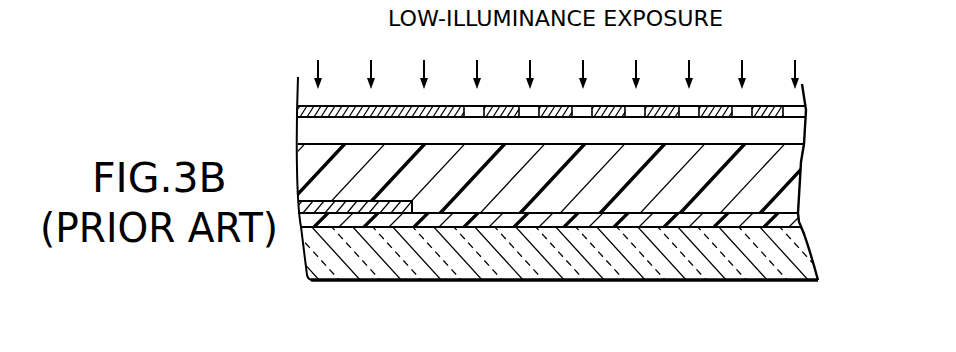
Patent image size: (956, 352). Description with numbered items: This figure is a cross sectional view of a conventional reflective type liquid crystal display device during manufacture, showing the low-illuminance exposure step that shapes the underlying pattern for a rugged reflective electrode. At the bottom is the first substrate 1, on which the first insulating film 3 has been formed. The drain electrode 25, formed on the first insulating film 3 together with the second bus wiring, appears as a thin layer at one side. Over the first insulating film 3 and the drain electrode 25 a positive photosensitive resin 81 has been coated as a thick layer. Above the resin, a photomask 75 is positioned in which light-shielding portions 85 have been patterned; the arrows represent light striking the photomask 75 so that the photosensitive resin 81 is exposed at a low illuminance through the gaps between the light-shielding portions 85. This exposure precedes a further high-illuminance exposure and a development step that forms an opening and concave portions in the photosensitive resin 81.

The first substrate 1 is at (706, 262).
The first insulating film 3 is at (603, 222).
The drain electrode 25 is at (347, 210).
The photomask 75 is at (813, 104).
The positive photosensitive resin 81 is at (496, 206).
The light-shielding portions 85 is at (768, 106).